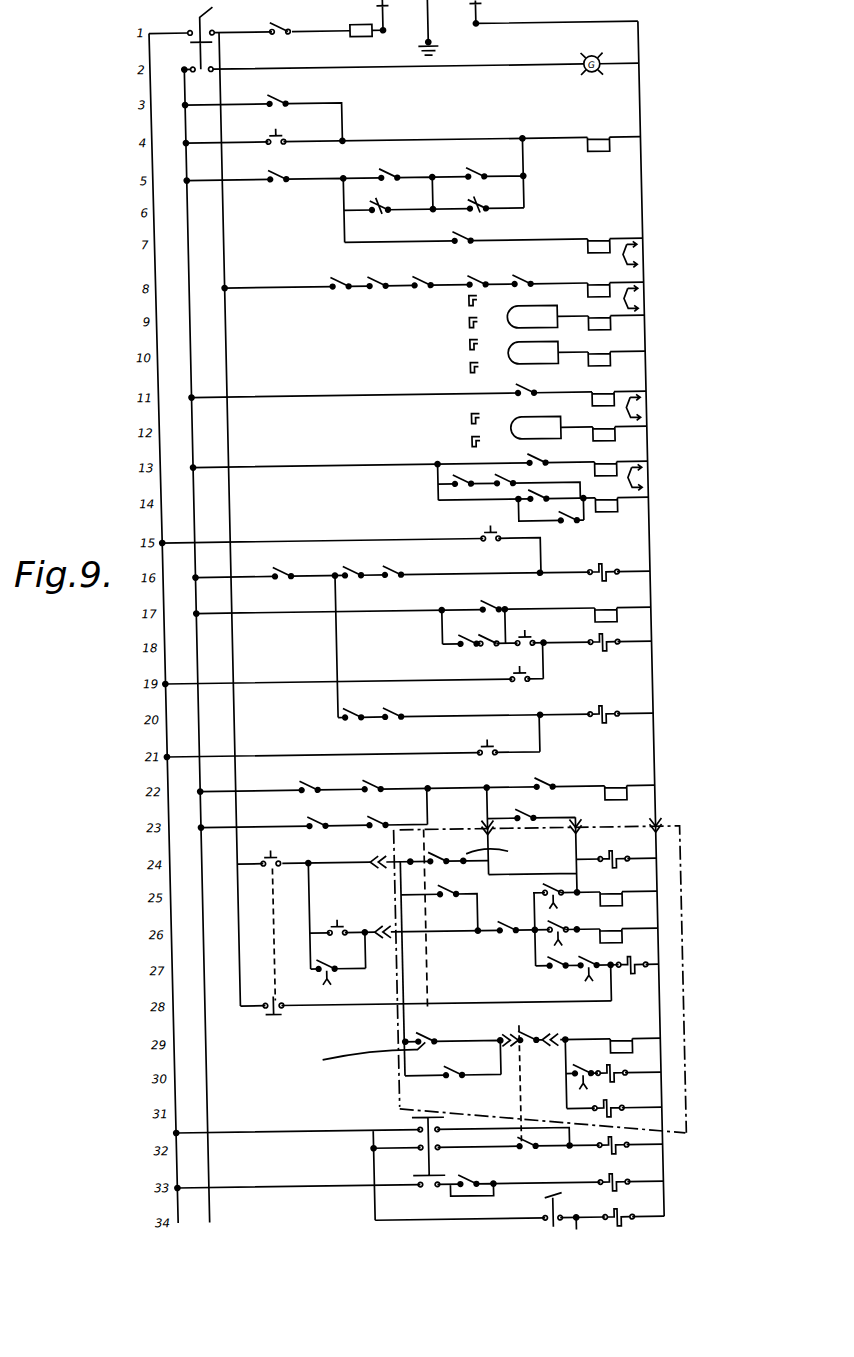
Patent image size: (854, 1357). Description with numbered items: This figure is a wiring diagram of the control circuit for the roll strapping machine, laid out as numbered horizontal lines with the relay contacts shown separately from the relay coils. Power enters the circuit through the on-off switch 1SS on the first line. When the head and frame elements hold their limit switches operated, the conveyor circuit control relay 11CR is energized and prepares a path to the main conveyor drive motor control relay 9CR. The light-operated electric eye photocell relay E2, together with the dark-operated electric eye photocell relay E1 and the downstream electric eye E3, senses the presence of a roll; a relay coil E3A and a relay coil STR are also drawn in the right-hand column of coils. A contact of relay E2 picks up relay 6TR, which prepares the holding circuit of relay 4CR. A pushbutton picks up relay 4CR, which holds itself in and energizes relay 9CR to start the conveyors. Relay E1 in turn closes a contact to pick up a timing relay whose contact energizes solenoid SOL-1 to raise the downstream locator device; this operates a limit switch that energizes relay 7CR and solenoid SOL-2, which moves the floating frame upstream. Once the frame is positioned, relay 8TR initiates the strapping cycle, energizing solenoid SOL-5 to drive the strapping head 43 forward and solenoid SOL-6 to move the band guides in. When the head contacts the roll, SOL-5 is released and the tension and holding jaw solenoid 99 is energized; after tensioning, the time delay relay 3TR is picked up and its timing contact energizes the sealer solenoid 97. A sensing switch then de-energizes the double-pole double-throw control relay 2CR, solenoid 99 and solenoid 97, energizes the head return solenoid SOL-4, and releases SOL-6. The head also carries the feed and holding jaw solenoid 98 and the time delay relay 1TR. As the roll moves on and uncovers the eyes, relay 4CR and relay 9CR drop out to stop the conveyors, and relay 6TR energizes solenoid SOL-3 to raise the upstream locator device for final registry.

The strapping head 43 is at (662, 852).
The sealer solenoid 97 is at (612, 978).
The feed and holding jaw solenoid 98 is at (598, 1106).
The tension and holding jaw solenoid 99 is at (596, 860).
The on-off switch 1SS is at (286, 22).
The relay 4CR is at (607, 160).
The main conveyor drive motor control relay 9CR is at (590, 245).
The conveyor circuit control relay 11CR is at (590, 289).
The electric eye E3 is at (604, 334).
The electric eye photocell relay E1 is at (603, 370).
The relay coil E3A is at (600, 398).
The electric eye photocell relay E2 is at (606, 445).
The timing relay coil STR is at (600, 468).
The relay 6TR is at (607, 516).
The solenoid SOL-1 is at (600, 568).
The relay 7CR is at (604, 626).
The solenoid SOL-2 is at (590, 658).
The solenoid SOL-3 is at (600, 712).
The relay 8TR is at (600, 792).
The double-pole double-throw control relay 2CR is at (603, 908).
The time delay relay 3TR is at (602, 946).
The time delay relay 1TR is at (610, 1052).
The head return solenoid SOL-4 is at (596, 1142).
The solenoid SOL-5 is at (596, 1180).
The band guide solenoid SOL-6 is at (600, 1214).